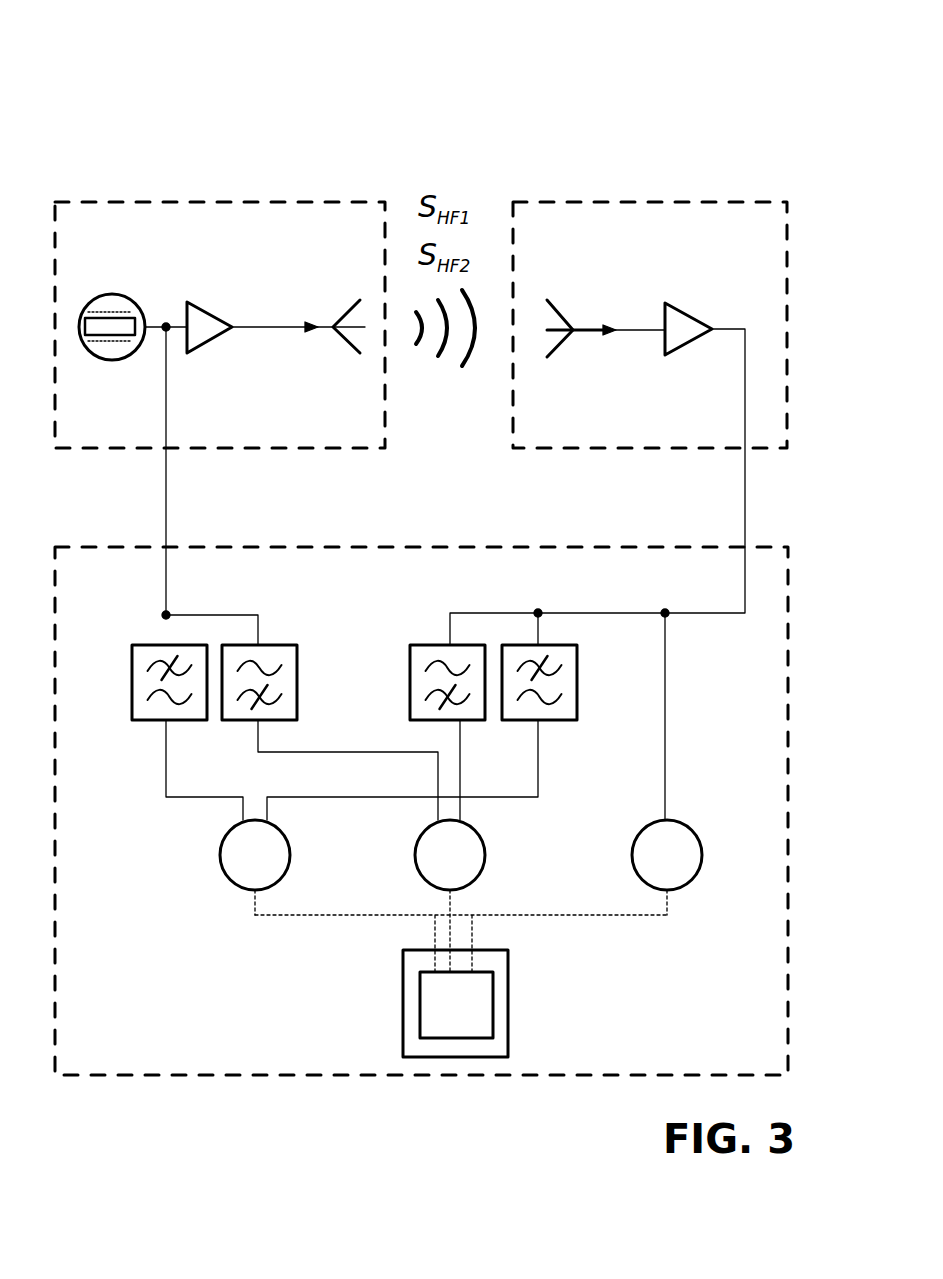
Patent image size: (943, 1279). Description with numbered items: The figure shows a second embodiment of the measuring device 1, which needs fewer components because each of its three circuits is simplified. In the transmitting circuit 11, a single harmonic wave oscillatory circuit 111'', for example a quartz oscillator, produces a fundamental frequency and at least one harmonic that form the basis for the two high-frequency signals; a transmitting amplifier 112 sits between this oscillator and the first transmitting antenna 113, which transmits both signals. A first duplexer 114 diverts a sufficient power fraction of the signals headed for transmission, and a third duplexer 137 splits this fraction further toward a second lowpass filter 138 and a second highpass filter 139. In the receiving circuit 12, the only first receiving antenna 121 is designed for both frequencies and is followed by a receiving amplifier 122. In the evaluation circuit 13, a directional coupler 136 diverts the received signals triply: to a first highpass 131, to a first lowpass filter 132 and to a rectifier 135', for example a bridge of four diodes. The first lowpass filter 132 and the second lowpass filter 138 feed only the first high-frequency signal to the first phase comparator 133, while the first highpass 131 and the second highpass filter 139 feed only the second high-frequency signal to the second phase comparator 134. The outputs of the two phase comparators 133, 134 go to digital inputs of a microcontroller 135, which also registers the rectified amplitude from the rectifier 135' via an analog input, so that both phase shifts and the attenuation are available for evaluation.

The measuring device 1 is at (681, 108).
The transmitting circuit 11 is at (203, 202).
The receiving circuit 12 is at (607, 202).
The evaluation circuit 13 is at (310, 1077).
The harmonic wave oscillatory circuit 111'' is at (139, 291).
The transmitting amplifier 112 is at (190, 302).
The first transmitting antenna 113 is at (318, 335).
The first duplexer 114 is at (170, 332).
The first receiving antenna 121 is at (592, 333).
The receiving amplifier 122 is at (674, 305).
The first highpass 131 is at (410, 663).
The first lowpass filter 132 is at (578, 680).
The first phase comparator 133 is at (228, 873).
The second phase comparator 134 is at (487, 860).
The microcontroller 135 is at (502, 1003).
The rectifier 135' is at (704, 764).
The directional coupler 136 is at (663, 611).
The third duplexer 137 is at (170, 611).
The second lowpass filter 138 is at (130, 668).
The second highpass filter 139 is at (262, 642).